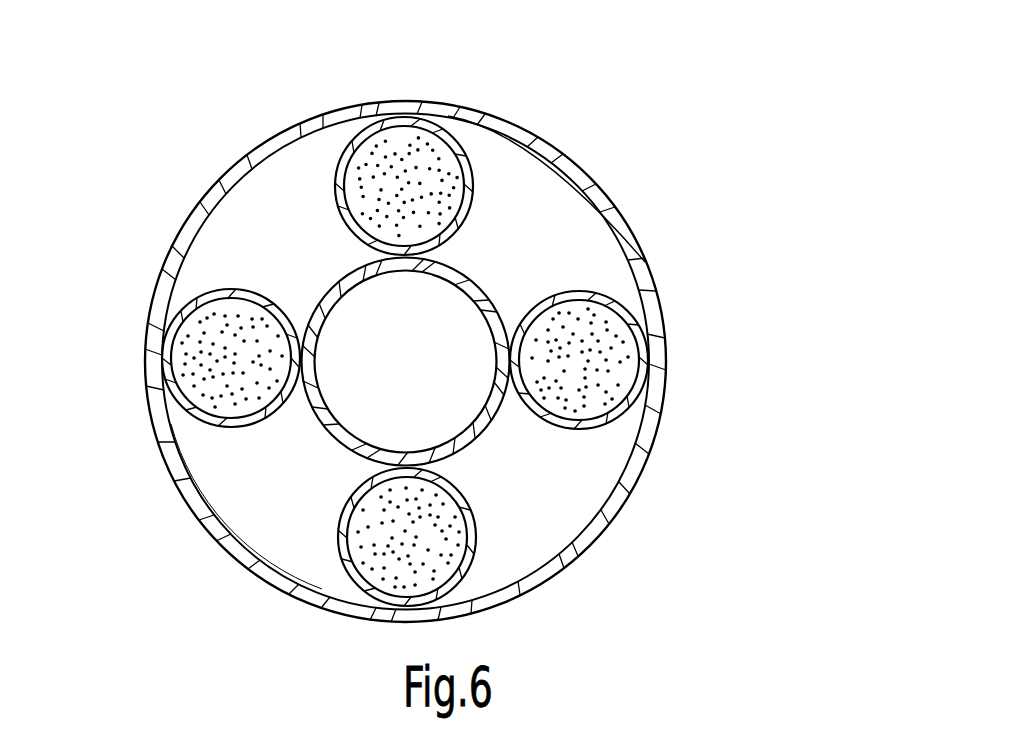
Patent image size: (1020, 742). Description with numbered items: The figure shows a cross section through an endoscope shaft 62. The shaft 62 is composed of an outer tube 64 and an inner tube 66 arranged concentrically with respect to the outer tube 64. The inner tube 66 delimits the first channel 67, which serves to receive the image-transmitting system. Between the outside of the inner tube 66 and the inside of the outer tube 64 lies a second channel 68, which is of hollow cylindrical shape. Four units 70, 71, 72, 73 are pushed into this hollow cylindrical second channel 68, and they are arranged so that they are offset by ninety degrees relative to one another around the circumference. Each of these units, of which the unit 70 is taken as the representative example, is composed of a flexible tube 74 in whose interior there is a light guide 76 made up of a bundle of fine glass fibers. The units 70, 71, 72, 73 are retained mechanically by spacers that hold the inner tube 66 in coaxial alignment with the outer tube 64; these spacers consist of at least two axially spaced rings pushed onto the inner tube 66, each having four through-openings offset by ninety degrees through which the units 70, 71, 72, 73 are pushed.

The shaft 62 is at (614, 111).
The outer tube 64 is at (602, 213).
The inner tube 66 is at (487, 418).
The first channel 67 is at (437, 405).
The second channel 68 is at (589, 283).
The unit 70 is at (390, 114).
The unit 71 is at (652, 337).
The unit 72 is at (350, 568).
The unit 73 is at (165, 332).
The flexible tube 74 is at (353, 145).
The light guide 76 is at (441, 122).